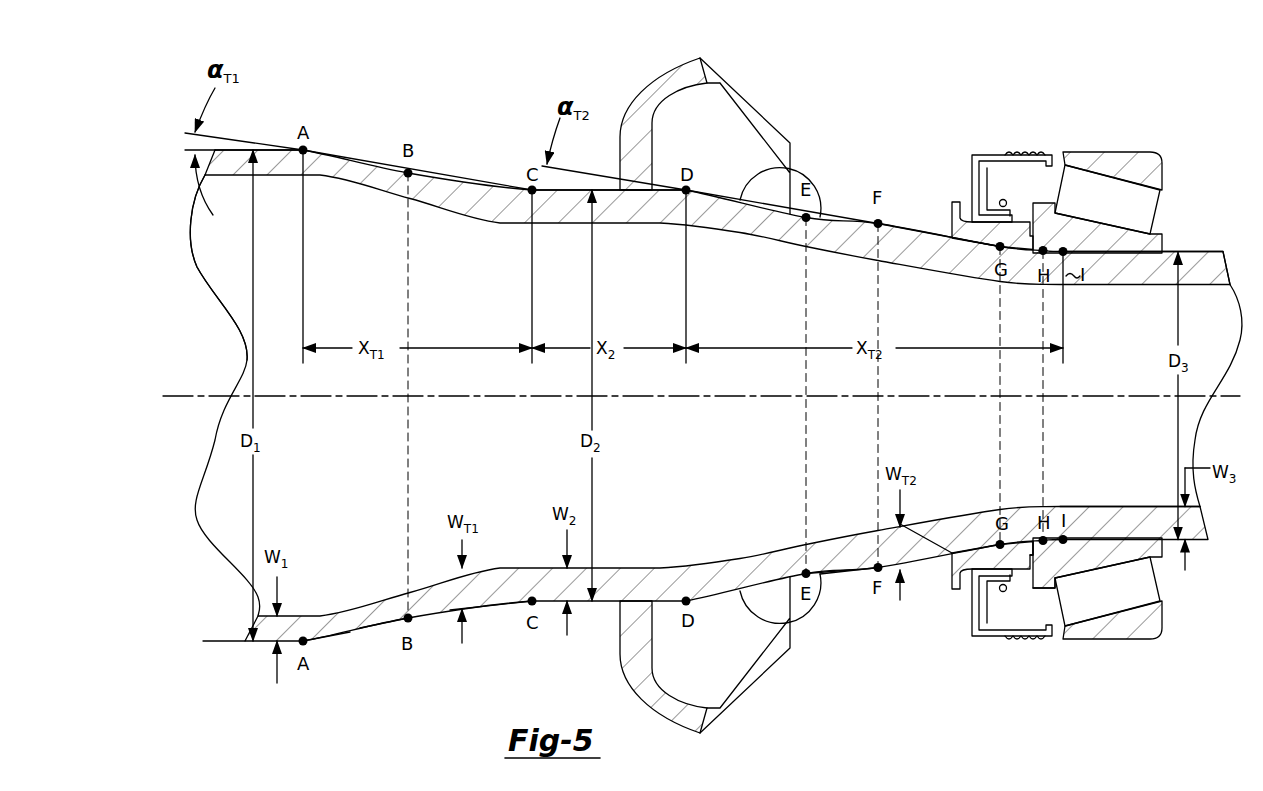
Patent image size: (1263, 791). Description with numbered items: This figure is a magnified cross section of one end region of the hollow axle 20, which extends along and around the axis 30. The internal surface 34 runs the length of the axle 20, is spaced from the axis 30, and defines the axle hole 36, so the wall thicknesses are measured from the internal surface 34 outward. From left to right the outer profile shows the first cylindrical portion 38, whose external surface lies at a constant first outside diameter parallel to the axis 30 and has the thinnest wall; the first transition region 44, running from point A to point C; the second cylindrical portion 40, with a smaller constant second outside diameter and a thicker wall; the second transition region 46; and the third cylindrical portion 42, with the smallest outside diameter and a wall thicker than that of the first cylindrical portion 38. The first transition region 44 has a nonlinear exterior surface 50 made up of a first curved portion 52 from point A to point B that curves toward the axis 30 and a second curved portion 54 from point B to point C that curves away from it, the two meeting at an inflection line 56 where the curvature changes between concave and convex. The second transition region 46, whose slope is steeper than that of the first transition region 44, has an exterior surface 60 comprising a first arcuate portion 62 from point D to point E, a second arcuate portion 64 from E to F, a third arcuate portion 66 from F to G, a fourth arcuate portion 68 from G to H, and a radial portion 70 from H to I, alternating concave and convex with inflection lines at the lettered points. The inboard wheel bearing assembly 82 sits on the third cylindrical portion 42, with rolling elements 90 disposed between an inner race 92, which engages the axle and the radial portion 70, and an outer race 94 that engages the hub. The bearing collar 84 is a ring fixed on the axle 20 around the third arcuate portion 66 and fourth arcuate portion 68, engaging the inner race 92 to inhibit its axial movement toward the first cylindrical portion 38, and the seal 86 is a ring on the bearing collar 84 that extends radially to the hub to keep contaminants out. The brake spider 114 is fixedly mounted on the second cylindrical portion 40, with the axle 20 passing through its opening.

The axle 20 is at (262, 645).
The axis 30 is at (212, 397).
The internal surface 34 is at (1083, 507).
The axle hole 36 is at (277, 358).
The first cylindrical portion 38 is at (255, 148).
The second cylindrical portion 40 is at (573, 188).
The third cylindrical portion 42 is at (1198, 251).
The first transition region 44 is at (447, 176).
The second transition region 46 is at (835, 215).
The exterior surface 50 is at (385, 623).
The first curved portion 52 is at (333, 637).
The second curved portion 54 is at (478, 607).
The inflection line 56 is at (408, 430).
The exterior surface 60 is at (857, 570).
The first arcuate portion 62 is at (720, 597).
The second arcuate portion 64 is at (832, 573).
The third arcuate portion 66 is at (923, 563).
The fourth arcuate portion 68 is at (1028, 547).
The radial portion 70 is at (1050, 560).
The wheel bearing assembly 82 is at (1116, 341).
The bearing collar 84 is at (952, 203).
The seal 86 is at (1022, 157).
The rolling elements 90 is at (1122, 215).
The inner race 92 is at (1165, 240).
The outer race 94 is at (1122, 150).
The brake spider 114 is at (630, 100).